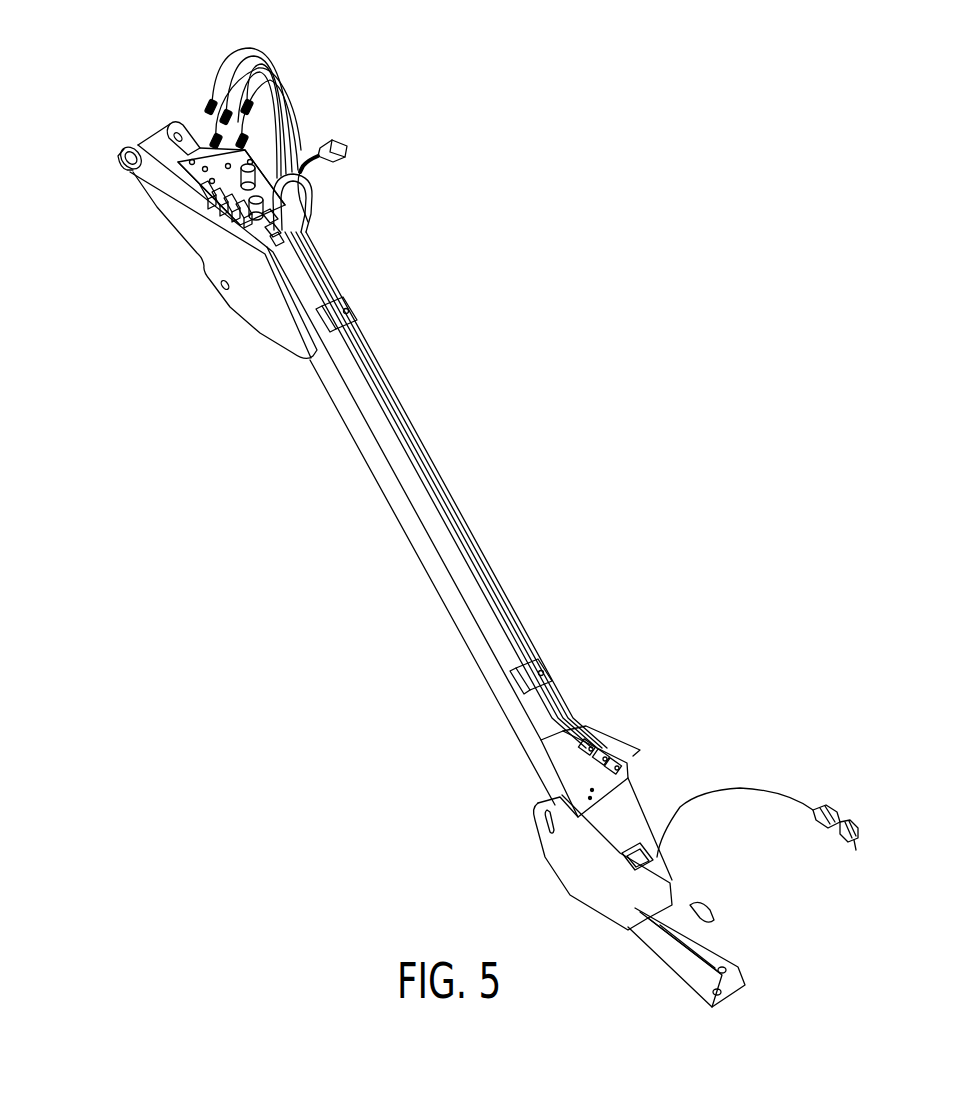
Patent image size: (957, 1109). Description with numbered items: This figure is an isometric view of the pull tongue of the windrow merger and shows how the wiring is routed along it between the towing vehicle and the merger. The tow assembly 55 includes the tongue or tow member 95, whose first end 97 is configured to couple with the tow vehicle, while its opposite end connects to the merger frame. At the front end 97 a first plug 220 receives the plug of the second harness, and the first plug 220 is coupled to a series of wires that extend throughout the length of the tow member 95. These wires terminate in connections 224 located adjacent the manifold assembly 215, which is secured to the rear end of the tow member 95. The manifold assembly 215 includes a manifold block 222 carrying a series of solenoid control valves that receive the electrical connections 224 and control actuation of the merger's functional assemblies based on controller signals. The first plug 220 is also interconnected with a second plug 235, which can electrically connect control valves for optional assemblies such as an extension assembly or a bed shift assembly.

The tow assembly 55 is at (492, 512).
The tow member 95 is at (430, 566).
The manifold assembly 215 is at (155, 144).
The manifold block 222 is at (209, 206).
The connections 224 is at (207, 94).
The second plug 235 is at (322, 136).
The first end 97 is at (741, 936).
The first plug 220 is at (738, 788).